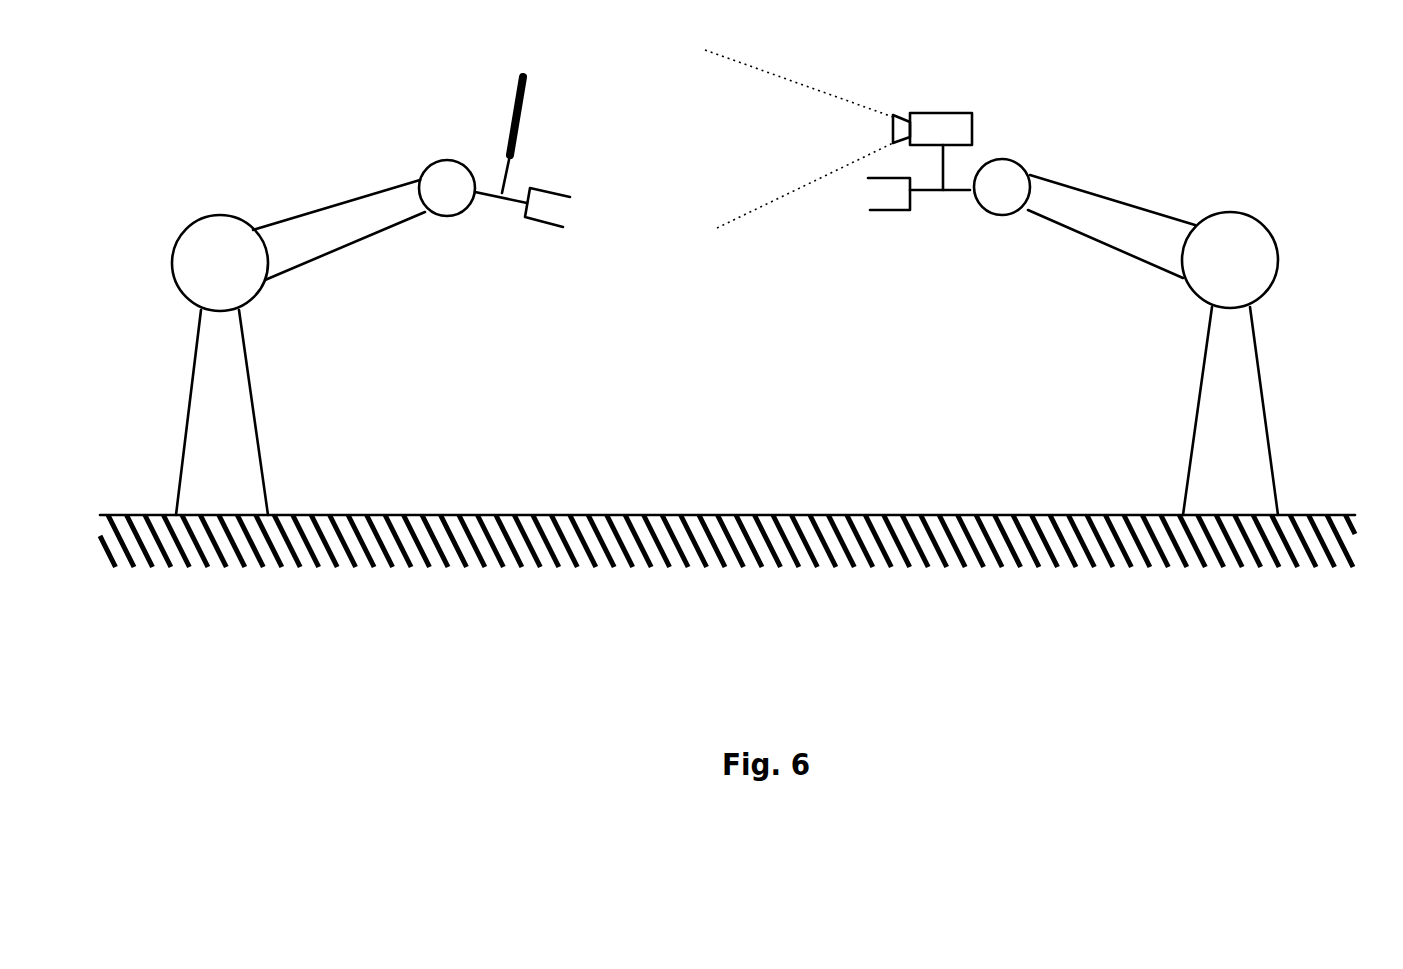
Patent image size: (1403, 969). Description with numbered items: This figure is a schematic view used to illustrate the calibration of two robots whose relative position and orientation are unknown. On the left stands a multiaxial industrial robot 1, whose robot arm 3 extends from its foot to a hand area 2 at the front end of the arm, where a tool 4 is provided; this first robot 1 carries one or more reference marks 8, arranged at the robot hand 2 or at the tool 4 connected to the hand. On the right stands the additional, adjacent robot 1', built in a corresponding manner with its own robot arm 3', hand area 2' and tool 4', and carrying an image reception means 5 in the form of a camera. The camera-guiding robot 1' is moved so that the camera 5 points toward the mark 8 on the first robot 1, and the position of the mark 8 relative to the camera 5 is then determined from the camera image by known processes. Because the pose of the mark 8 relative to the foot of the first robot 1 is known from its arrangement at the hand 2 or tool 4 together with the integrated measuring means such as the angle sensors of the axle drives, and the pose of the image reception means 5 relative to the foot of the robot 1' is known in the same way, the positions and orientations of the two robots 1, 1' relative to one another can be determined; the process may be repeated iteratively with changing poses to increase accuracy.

The industrial robot 1 is at (173, 365).
The hand area 2 is at (447, 239).
The robot arm 3 is at (339, 265).
The tool 4 is at (522, 251).
The reference mark 8 is at (523, 108).
The additional robot 1' is at (1269, 363).
The hand area of the additional robot 2' is at (1002, 229).
The robot arm of the additional robot 3' is at (1111, 255).
The tool of the additional robot 4' is at (919, 235).
The image reception means 5 is at (955, 120).